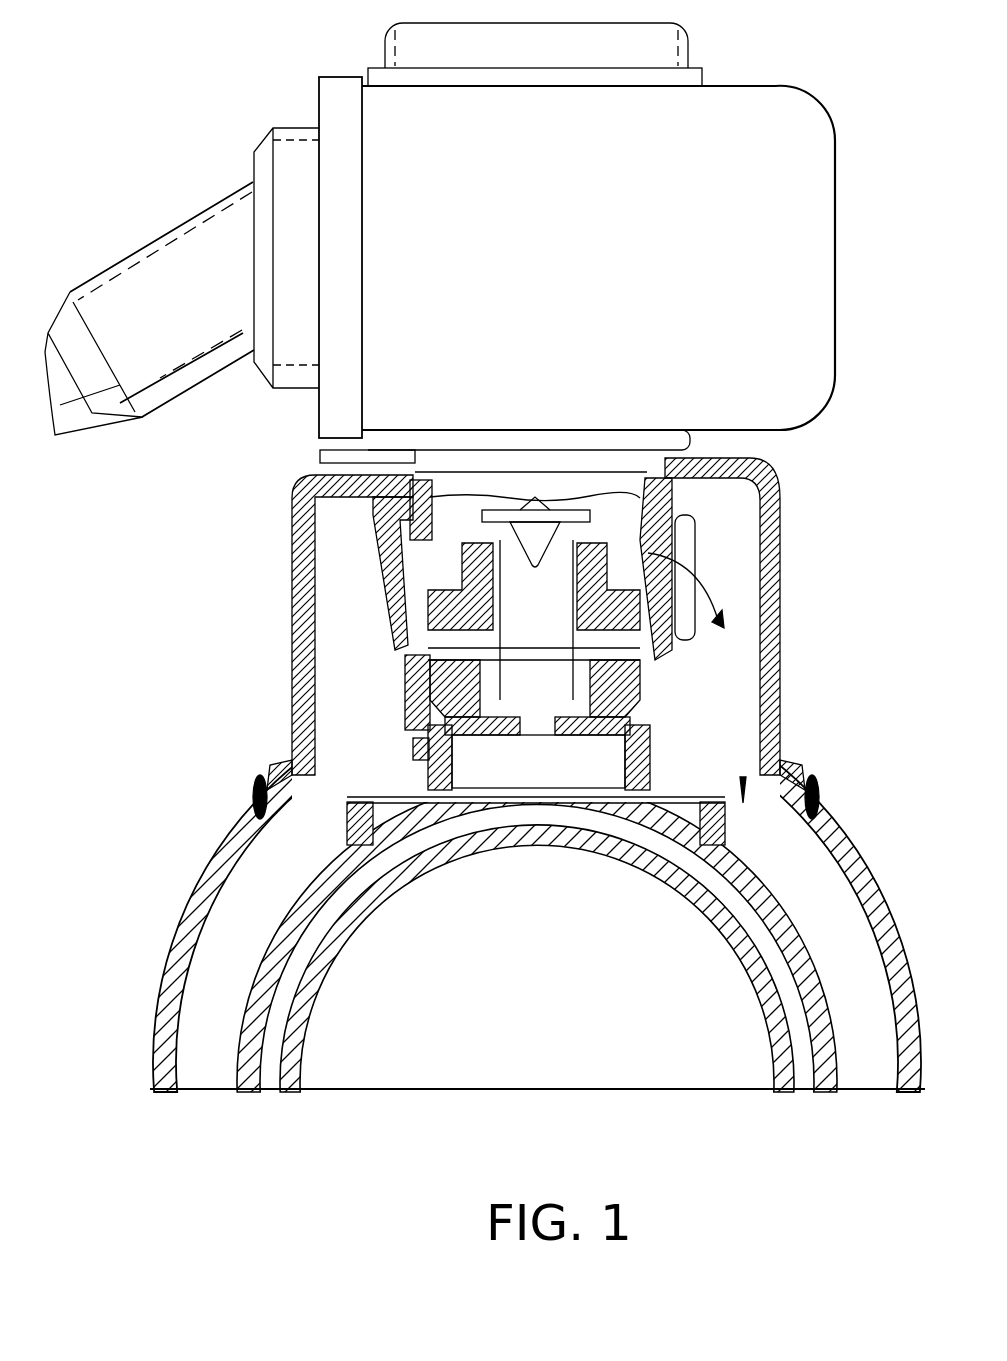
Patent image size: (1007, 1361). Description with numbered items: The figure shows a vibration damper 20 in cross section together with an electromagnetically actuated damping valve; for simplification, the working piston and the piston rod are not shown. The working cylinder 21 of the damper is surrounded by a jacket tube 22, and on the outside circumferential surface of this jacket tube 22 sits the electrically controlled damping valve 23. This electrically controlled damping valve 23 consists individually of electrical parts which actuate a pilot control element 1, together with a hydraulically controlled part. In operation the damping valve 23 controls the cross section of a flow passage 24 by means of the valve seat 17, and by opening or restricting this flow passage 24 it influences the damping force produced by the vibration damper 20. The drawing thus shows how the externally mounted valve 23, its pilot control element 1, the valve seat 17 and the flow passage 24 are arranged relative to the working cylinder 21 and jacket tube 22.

The pilot control element 1 is at (547, 508).
The valve seat 17 is at (420, 745).
The vibration damper 20 is at (868, 772).
The working cylinder 21 is at (812, 1008).
The jacket tube 22 is at (855, 893).
The electrically controlled damping valve 23 is at (848, 413).
The flow passage 24 is at (615, 742).